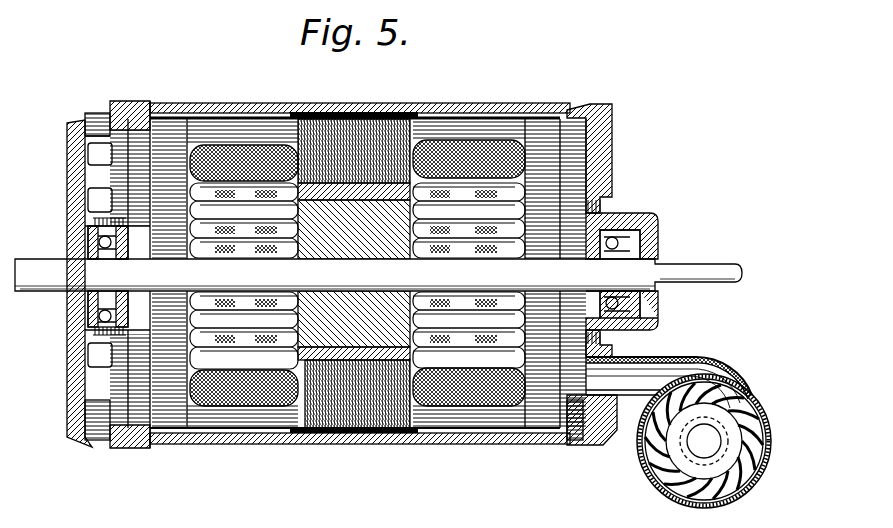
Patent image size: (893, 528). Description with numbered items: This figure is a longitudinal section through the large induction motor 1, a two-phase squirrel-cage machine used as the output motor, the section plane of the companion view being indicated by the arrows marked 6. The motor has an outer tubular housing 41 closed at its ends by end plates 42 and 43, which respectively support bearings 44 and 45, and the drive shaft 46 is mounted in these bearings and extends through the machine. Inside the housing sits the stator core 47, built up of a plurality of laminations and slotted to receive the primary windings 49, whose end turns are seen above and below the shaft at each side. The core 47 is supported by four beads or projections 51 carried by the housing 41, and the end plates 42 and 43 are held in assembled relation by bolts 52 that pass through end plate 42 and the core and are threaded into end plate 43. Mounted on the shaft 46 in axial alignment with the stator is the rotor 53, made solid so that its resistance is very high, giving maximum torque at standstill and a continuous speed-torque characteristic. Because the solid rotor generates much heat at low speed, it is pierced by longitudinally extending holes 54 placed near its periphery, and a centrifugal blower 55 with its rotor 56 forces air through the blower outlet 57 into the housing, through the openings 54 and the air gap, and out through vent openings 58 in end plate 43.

The large induction motor 1 is at (522, 92).
The section line 6- 6 is at (450, 80).
The outer tubular housing 41 is at (222, 446).
The end plate 42 is at (613, 135).
The end plate 43 is at (70, 186).
The bearing 44 is at (660, 222).
The bearing 45 is at (80, 336).
The drive shaft 46 is at (662, 263).
The stator core 47 is at (413, 132).
The primary windings 49 is at (222, 155).
The beads or projections 51 is at (344, 113).
The bolts 52 is at (543, 258).
The rotor 53 is at (396, 245).
The longitudinally extending holes 54 is at (268, 152).
The blower 55 is at (668, 480).
The blower rotor 56 is at (722, 395).
The blower outlet 57 is at (580, 432).
The vent openings 58 is at (95, 110).